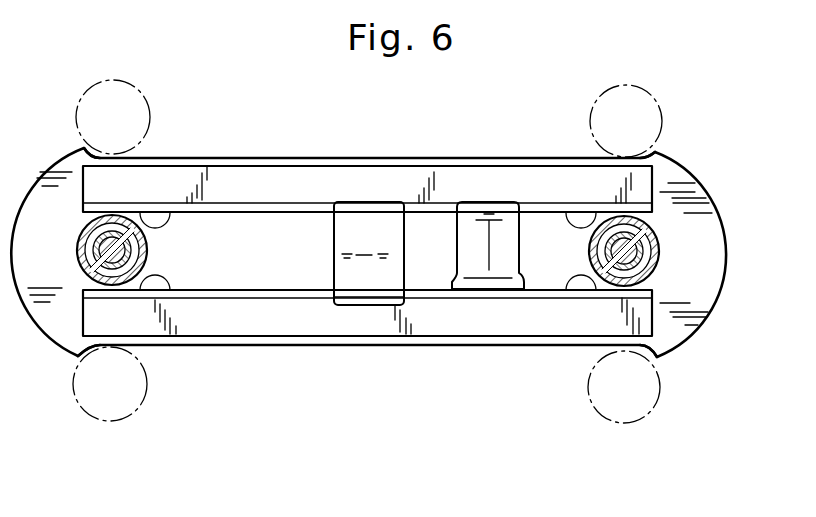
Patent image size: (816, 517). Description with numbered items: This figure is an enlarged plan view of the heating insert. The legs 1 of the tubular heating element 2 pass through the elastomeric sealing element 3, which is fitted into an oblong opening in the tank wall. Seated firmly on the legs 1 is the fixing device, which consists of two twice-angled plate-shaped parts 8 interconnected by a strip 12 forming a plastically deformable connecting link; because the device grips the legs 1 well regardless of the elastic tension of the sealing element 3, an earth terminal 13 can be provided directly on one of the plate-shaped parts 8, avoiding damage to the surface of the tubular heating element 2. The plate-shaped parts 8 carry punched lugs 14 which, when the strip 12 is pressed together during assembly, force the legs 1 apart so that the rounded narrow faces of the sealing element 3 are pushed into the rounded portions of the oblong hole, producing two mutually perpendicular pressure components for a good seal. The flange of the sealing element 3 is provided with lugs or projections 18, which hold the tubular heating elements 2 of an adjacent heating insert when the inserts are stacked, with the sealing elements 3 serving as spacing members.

The legs 1 is at (80, 257).
The tubular heating element 2 is at (134, 98).
The sealing element 3 is at (697, 300).
The plate-shaped parts 8 is at (464, 173).
The strip 12 is at (369, 253).
The earth terminal 13 is at (488, 245).
The punched lugs 14 is at (165, 276).
The lugs or projections 18 is at (78, 148).